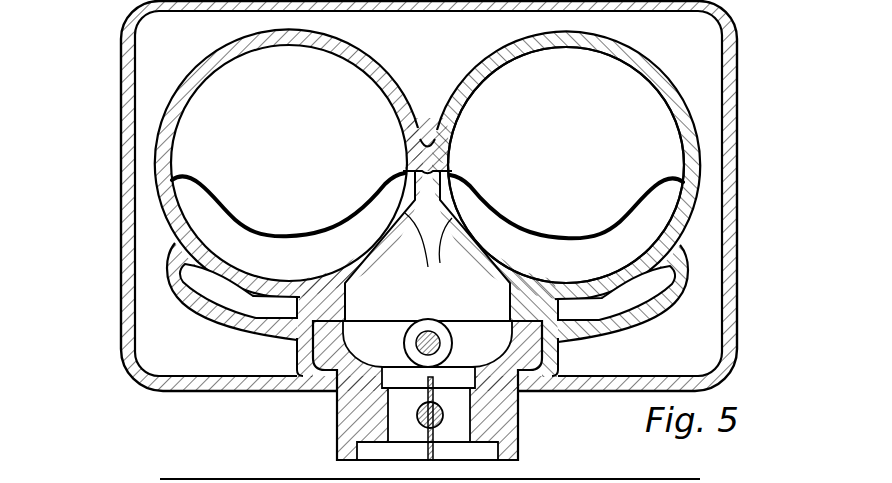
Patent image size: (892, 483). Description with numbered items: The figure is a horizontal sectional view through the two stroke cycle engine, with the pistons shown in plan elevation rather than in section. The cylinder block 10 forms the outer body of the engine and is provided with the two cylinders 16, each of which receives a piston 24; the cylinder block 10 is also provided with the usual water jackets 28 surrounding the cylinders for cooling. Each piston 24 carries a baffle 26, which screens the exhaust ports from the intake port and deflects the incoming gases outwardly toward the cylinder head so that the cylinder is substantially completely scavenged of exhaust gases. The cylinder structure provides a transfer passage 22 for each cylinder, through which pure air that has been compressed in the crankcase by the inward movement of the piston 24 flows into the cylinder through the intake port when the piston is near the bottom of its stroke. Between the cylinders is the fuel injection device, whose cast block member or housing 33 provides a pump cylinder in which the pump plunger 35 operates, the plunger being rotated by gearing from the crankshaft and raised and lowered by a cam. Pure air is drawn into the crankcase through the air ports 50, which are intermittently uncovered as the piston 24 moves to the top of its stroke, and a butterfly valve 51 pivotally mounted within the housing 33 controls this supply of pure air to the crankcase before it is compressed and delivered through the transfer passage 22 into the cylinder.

The cylinder block 10 is at (735, 72).
The cylinders 16 is at (694, 164).
The transfer passage 22 is at (217, 288).
The piston 24 is at (198, 113).
The baffle 26 is at (240, 208).
The water jackets 28 is at (163, 40).
The housing 33 is at (500, 405).
The pump plunger 35 is at (446, 330).
The air ports 50 is at (477, 268).
The butterfly valve 51 is at (360, 425).